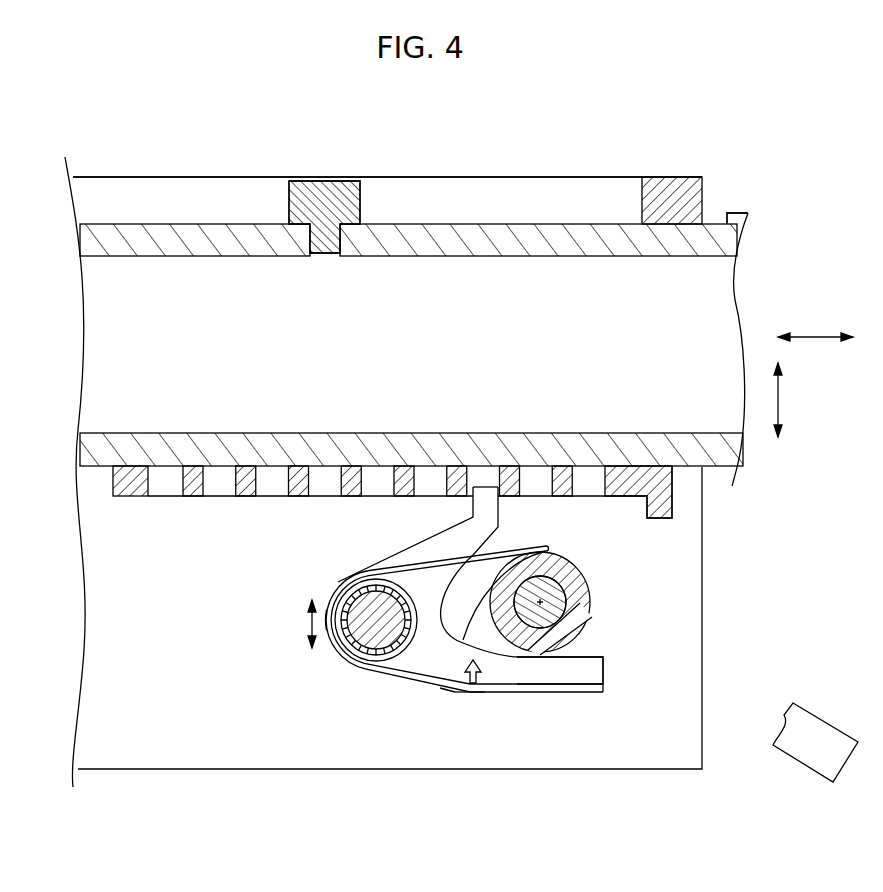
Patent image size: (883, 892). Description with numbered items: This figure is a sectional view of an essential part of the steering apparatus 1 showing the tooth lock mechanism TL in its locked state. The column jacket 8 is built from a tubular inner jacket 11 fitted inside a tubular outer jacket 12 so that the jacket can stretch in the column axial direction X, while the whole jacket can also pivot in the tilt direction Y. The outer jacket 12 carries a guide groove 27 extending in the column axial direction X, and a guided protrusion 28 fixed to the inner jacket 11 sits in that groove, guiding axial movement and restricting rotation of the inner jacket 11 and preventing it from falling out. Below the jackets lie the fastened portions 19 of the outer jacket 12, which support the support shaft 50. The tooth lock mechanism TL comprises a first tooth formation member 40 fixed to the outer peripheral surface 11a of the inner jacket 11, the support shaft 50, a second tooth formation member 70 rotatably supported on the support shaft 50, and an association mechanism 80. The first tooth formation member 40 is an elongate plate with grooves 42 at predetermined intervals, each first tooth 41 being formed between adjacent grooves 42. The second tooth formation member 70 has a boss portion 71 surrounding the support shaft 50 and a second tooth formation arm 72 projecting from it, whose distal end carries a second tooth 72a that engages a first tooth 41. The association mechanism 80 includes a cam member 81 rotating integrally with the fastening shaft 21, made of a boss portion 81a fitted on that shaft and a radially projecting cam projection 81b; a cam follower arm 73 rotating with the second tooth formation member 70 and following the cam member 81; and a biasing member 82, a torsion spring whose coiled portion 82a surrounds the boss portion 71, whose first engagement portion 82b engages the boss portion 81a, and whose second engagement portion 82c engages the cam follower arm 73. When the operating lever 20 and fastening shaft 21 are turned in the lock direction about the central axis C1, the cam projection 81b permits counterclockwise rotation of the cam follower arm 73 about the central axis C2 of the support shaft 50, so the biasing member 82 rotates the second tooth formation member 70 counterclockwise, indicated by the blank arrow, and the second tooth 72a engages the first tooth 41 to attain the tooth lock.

The steering apparatus 1 is at (775, 139).
The column jacket 8 is at (748, 128).
The inner jacket 11 is at (713, 225).
The outer peripheral surface 11a is at (726, 219).
The outer jacket 12 is at (670, 210).
The guide groove 27 is at (218, 196).
The guided protrusion 28 is at (330, 195).
The fastened portions 19 is at (155, 748).
The operating lever 20 is at (825, 730).
The fastening shaft 21 is at (548, 578).
The first tooth formation member 40 is at (128, 497).
The first teeth 41 is at (245, 470).
The grooves 42 is at (323, 475).
The support shaft 50 is at (350, 673).
The second tooth formation member 70 is at (362, 563).
The boss portion 71 is at (345, 575).
The second tooth formation arm 72 is at (413, 553).
The second tooth 72a is at (487, 488).
The cam follower arm 73 is at (531, 680).
The association mechanism 80 is at (468, 814).
The cam member 81 is at (580, 660).
The boss portion 81a is at (575, 628).
The cam projection 81b is at (440, 690).
The biasing member 82 is at (471, 697).
The coiled portion 82a is at (327, 660).
The first engagement portion 82b is at (545, 545).
The second engagement portion 82c is at (468, 696).
The central axis C1 is at (595, 603).
The central axis C2 is at (323, 592).
The tooth lock mechanism TL is at (373, 687).
The column axial direction X is at (815, 335).
The tilt direction Y is at (782, 395).